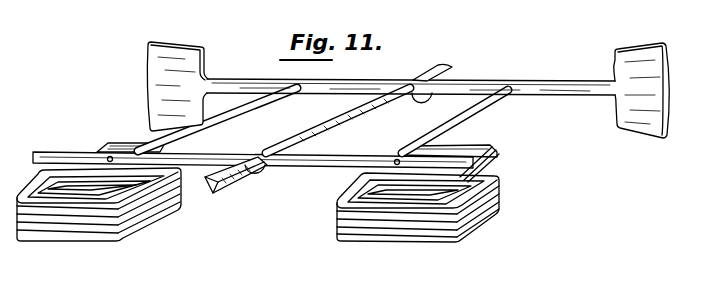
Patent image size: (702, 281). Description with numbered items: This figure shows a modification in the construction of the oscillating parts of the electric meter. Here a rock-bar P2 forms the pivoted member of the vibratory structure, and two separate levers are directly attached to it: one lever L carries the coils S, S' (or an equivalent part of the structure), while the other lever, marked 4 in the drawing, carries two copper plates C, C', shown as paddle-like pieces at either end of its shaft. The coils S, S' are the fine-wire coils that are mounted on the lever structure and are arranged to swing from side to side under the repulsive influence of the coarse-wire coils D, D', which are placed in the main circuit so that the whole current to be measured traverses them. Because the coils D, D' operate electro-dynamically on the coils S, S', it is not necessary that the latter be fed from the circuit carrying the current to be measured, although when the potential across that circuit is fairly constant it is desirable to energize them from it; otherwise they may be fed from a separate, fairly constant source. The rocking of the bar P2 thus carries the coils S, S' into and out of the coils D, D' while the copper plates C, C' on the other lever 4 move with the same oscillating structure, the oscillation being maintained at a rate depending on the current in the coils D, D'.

The copper plate C is at (177, 73).
The copper plate C' is at (642, 79).
The lug 4 is at (419, 66).
The rock-bar P2 is at (343, 116).
The lever L is at (233, 141).
The coil S is at (122, 142).
The coil S' is at (459, 163).
The coil D is at (99, 214).
The coil D' is at (418, 218).